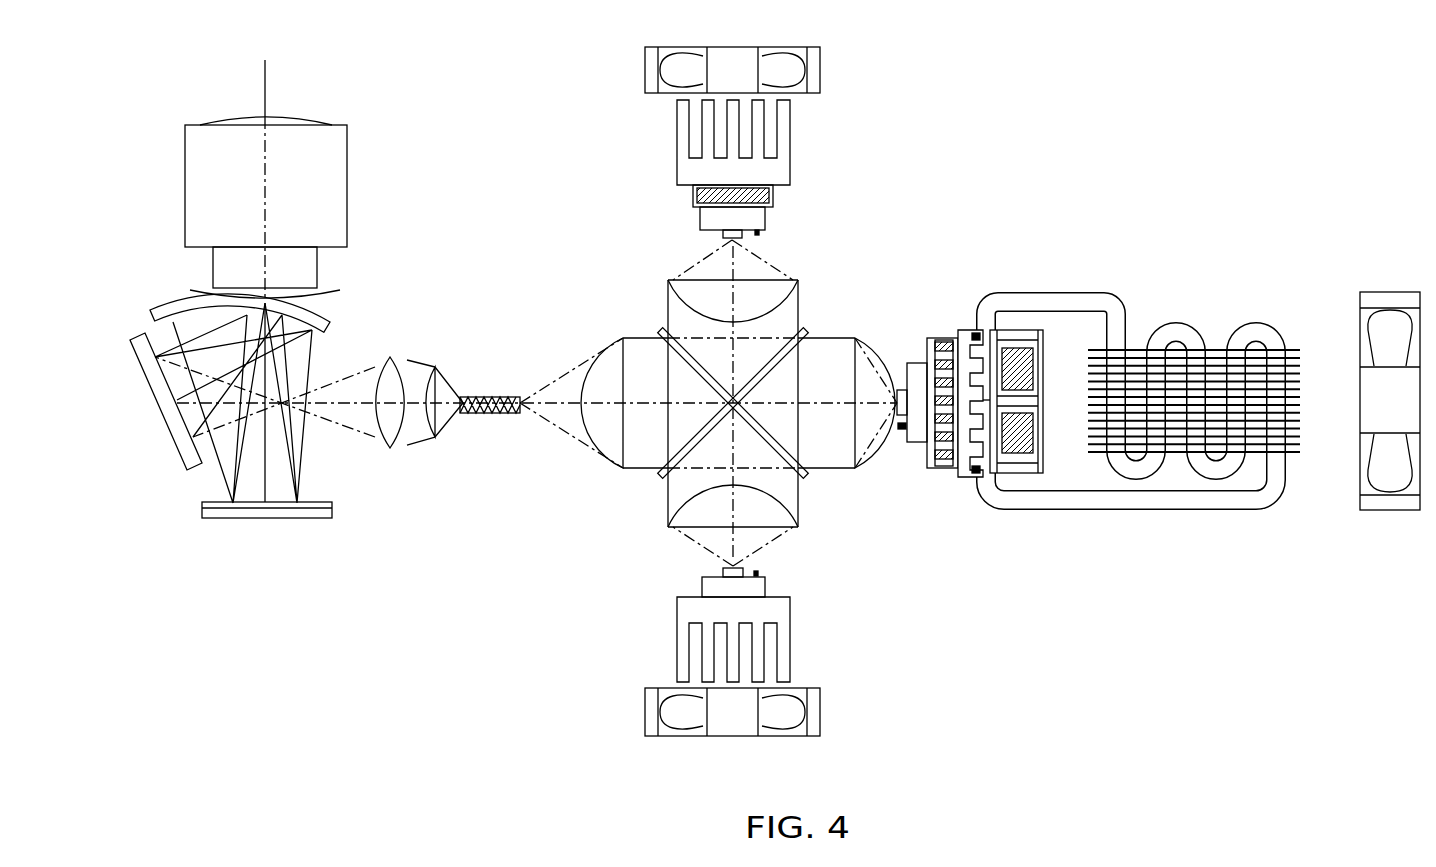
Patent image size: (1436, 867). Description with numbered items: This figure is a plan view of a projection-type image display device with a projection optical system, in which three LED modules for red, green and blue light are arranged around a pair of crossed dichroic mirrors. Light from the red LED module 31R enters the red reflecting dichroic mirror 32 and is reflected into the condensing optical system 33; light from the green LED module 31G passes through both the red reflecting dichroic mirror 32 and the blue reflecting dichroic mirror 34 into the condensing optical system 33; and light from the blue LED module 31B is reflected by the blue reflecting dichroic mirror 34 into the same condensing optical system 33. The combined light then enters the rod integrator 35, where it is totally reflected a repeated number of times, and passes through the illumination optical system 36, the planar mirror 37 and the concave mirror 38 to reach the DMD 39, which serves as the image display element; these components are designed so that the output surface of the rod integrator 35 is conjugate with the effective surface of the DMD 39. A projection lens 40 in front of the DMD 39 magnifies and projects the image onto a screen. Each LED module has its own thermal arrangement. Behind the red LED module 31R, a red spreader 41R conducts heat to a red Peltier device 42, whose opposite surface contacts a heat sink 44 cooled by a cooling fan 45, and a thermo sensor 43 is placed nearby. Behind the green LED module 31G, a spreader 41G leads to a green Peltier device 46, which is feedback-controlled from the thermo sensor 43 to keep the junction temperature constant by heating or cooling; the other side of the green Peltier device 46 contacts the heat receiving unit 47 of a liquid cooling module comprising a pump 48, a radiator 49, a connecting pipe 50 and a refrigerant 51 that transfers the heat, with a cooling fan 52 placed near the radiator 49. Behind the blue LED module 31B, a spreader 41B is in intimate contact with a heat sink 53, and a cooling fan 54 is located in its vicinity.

The red LED module 31R is at (708, 242).
The green LED module 31G is at (897, 392).
The blue LED module 31B is at (722, 572).
The red reflecting dichroic mirror 32 is at (660, 476).
The condensing optical system 33 is at (620, 372).
The blue reflecting dichroic mirror 34 is at (806, 478).
The rod integrator 35 is at (500, 396).
The illumination optical system 36 is at (415, 362).
The planar mirror 37 is at (142, 375).
The concave mirror 38 is at (158, 302).
The DMD 39 is at (222, 520).
The projection lens 40 is at (336, 166).
The red spreader 41R is at (700, 220).
The spreader 41G is at (913, 443).
The spreader 41B is at (702, 588).
The red Peltier device 42 is at (694, 197).
The thermo sensor 43 is at (758, 234).
The heat sink 44 is at (685, 118).
The cooling fan 45 is at (645, 73).
The green Peltier device 46 is at (945, 340).
The heat receiving unit 47 is at (968, 335).
The pump 48 is at (1017, 340).
The radiator 49 is at (1253, 321).
The pipe 50 is at (1052, 292).
The refrigerant 51 is at (1170, 505).
The cooling fan 52 is at (1392, 292).
The heat sink 53 is at (780, 613).
The cooling fan 54 is at (820, 712).